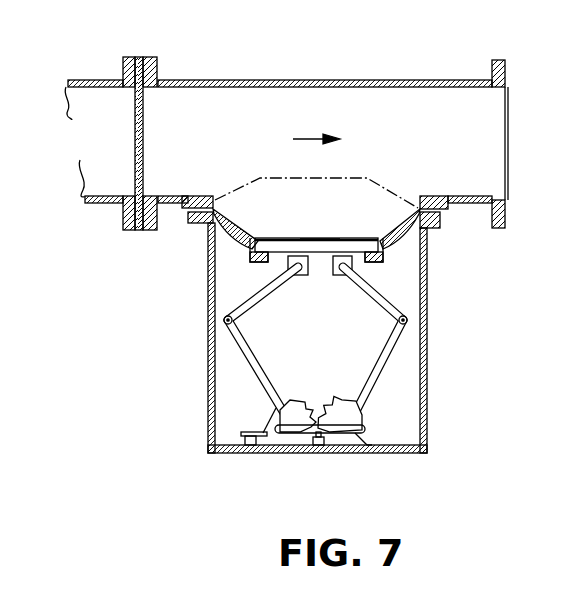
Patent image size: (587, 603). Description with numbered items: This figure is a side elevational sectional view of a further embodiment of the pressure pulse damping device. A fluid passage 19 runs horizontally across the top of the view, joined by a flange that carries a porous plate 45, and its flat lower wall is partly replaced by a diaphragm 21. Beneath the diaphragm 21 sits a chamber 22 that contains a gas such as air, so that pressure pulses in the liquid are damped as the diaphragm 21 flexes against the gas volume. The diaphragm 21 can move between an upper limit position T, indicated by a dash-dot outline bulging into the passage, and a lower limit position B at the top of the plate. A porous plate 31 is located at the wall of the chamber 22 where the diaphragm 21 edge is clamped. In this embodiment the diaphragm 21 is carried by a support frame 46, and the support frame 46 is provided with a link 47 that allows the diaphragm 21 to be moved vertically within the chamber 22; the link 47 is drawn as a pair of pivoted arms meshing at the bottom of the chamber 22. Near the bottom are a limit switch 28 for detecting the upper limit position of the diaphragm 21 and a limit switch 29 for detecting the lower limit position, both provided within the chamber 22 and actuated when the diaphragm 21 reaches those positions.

The fluid passage 19 is at (247, 97).
The porous plate 45 is at (143, 116).
The chamber 22 is at (427, 289).
The upper limit position T is at (369, 177).
The diaphragm 21 is at (274, 240).
The lower limit position B is at (337, 236).
The porous plate 31 is at (237, 249).
The support frame 46 is at (279, 259).
The link 47 is at (255, 367).
The limit switch 29 is at (250, 453).
The limit switch 28 is at (316, 452).